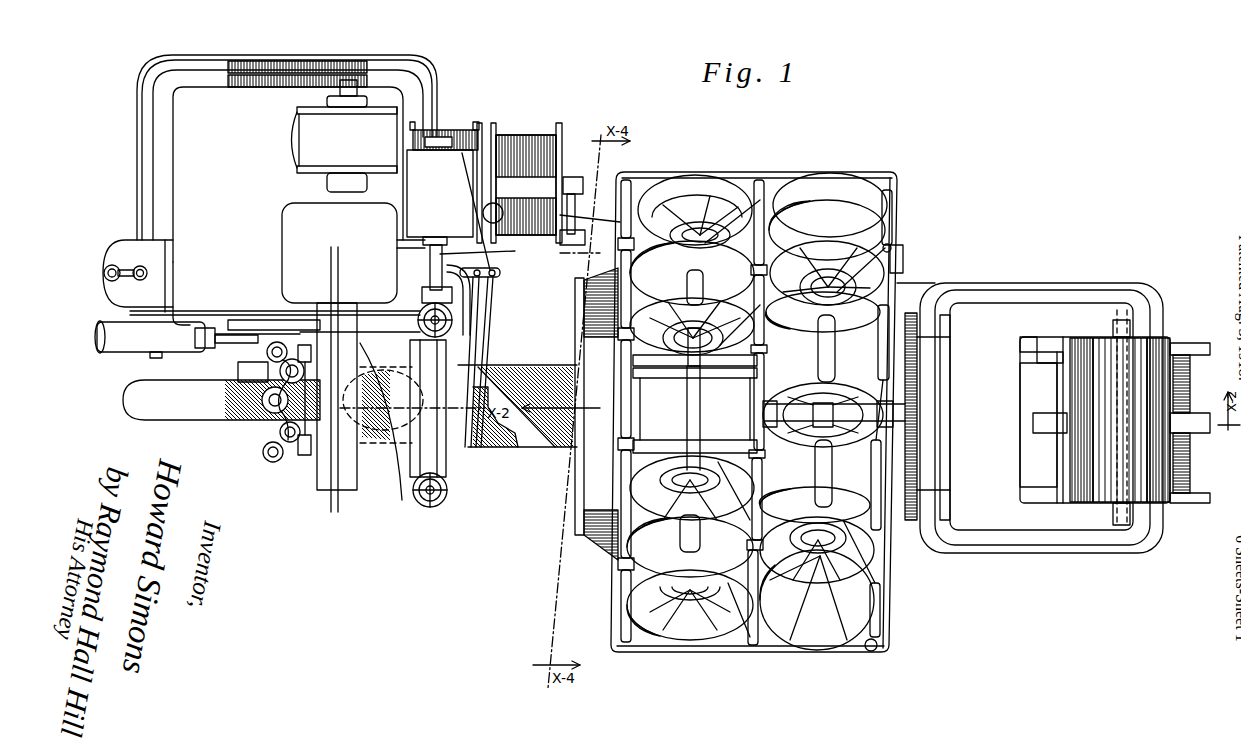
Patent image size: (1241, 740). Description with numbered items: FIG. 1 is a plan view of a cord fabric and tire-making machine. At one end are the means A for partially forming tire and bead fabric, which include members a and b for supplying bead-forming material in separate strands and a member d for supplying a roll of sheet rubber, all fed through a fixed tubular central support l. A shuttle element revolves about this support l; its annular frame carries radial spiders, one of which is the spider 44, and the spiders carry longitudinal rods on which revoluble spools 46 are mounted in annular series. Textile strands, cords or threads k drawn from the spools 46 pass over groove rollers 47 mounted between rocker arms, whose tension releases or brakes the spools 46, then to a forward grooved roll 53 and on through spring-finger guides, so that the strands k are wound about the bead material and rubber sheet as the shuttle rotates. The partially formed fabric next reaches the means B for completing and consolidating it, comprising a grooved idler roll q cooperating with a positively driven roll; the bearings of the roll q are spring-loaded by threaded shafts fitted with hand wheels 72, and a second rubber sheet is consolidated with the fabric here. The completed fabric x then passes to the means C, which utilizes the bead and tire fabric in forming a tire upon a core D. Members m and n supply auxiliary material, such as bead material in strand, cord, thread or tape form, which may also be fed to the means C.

The member for supplying auxiliary material n is at (450, 136).
The member for supplying auxiliary material m is at (512, 135).
The lever p is at (492, 262).
The hand wheels 72 is at (435, 333).
The means for completing and consolidating fabric B is at (453, 504).
The feed and consolidating roll q is at (387, 400).
The completed bead and tire fabric x is at (367, 446).
The textile strands, cords or threads k is at (650, 656).
The means for partially forming tire and bead fabric A is at (730, 412).
The forward grooved roll 53 is at (628, 174).
The groove roller 47 is at (766, 175).
The spools 46 is at (713, 183).
The radial spider 44 is at (903, 262).
The tubular central support l is at (1033, 418).
The member for supplying sheet rubber d is at (1168, 345).
The member for supplying bead-forming material a is at (1190, 380).
The member for supplying bead-forming material b is at (1190, 455).
The core D is at (242, 398).
The means for utilizing fabric in tire formation C is at (286, 414).